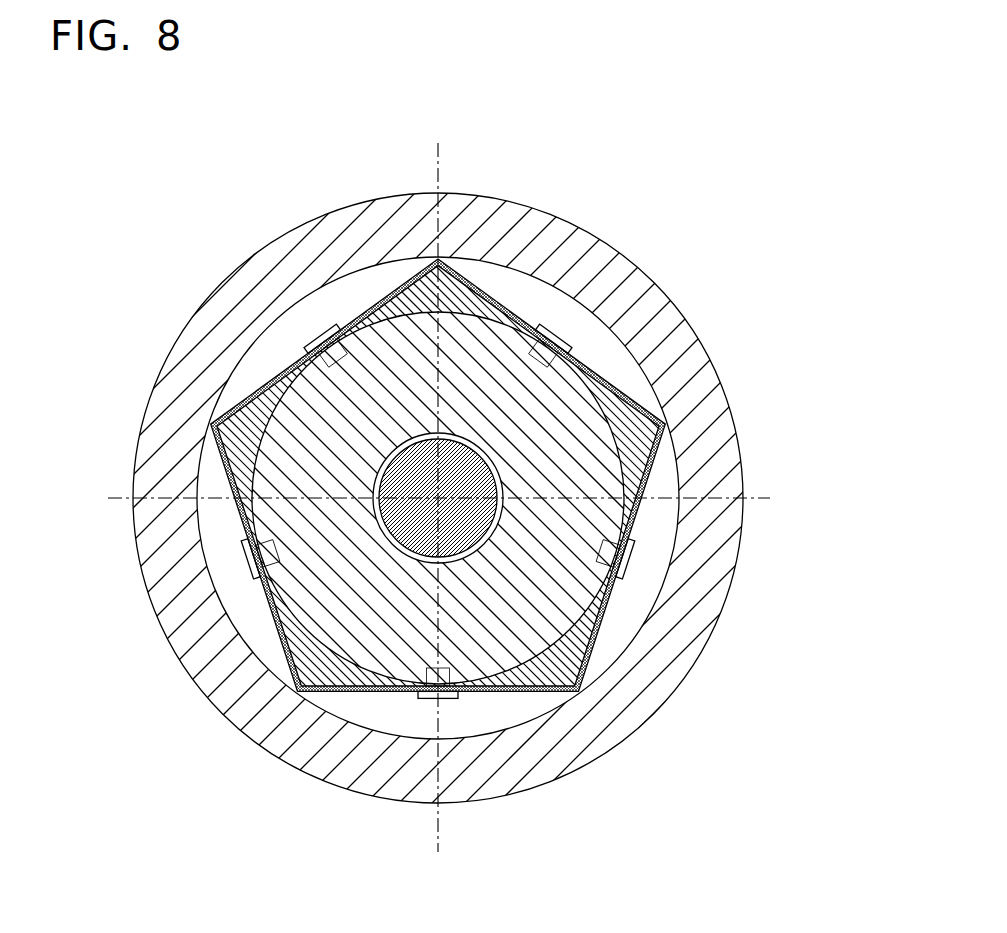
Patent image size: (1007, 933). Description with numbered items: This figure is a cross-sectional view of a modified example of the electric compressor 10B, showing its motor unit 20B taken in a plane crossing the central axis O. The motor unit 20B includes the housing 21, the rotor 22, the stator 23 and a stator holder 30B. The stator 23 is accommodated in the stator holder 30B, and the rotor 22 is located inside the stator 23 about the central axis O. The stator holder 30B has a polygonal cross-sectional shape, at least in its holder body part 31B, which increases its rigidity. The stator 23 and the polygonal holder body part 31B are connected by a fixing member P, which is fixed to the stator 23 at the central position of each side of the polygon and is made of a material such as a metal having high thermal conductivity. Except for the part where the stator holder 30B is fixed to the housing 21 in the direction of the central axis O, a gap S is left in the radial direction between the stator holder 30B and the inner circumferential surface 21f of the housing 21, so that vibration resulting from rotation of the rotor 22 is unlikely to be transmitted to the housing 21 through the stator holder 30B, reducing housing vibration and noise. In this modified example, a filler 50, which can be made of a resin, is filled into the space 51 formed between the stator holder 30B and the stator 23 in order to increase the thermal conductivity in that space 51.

The electric compressor 10B is at (631, 223).
The motor unit 20B is at (508, 200).
The housing 21 is at (553, 232).
The inner circumferential surface 21f is at (637, 373).
The rotor 22 is at (400, 557).
The stator 23 is at (537, 663).
The stator holder 30B is at (660, 562).
The holder body part 31B is at (600, 628).
The filler 50 is at (667, 422).
The space 51 is at (652, 458).
The gap S is at (565, 307).
The fixing member P is at (322, 336).
The central axis O is at (437, 497).